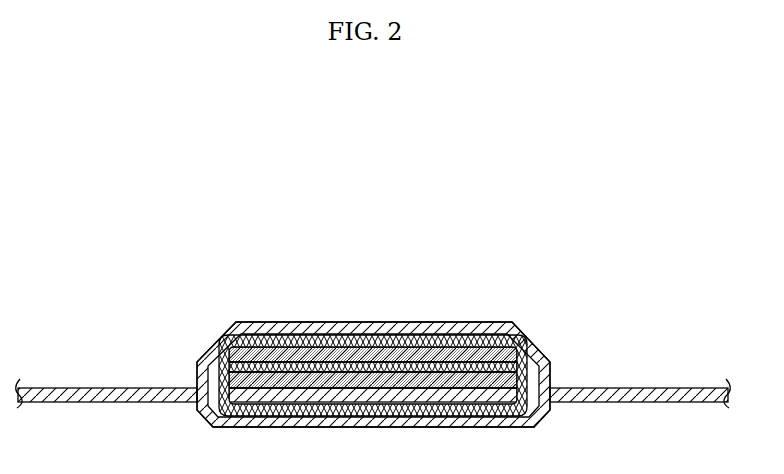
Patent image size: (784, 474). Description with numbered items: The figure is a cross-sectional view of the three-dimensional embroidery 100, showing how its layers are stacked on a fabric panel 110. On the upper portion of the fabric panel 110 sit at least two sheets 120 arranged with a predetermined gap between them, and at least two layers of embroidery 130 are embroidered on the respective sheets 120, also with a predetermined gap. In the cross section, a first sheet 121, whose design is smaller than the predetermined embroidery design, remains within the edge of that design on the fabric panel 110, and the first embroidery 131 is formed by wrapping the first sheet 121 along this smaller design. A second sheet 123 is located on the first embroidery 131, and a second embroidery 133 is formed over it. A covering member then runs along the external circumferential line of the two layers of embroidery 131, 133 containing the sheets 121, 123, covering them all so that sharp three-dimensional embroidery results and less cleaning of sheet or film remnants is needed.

The three-dimensional embroidery 100 is at (387, 237).
The fabric panel 110 is at (632, 393).
The sheets 120 is at (468, 272).
The first sheet 121 is at (500, 368).
The second sheet 123 is at (462, 355).
The layers of embroidery 130 is at (242, 272).
The first embroidery 131 is at (281, 366).
The second embroidery 133 is at (245, 338).